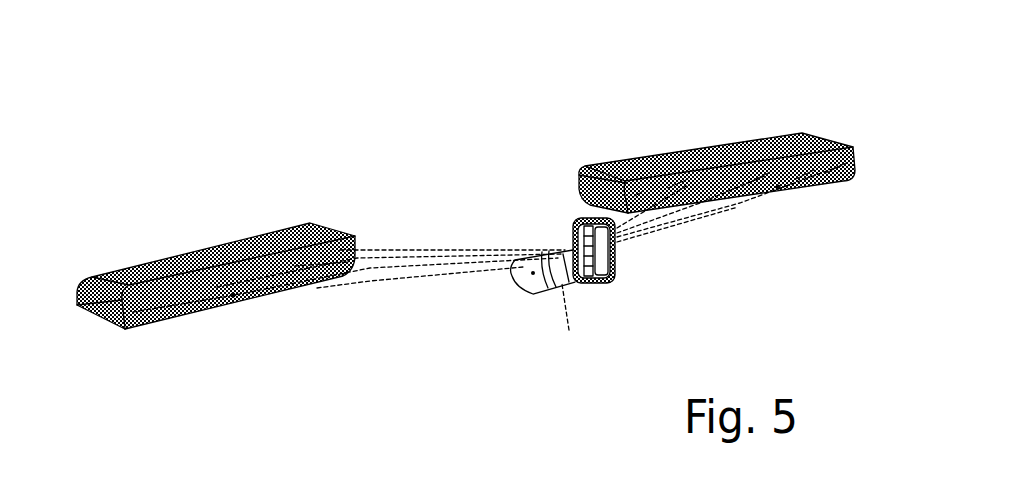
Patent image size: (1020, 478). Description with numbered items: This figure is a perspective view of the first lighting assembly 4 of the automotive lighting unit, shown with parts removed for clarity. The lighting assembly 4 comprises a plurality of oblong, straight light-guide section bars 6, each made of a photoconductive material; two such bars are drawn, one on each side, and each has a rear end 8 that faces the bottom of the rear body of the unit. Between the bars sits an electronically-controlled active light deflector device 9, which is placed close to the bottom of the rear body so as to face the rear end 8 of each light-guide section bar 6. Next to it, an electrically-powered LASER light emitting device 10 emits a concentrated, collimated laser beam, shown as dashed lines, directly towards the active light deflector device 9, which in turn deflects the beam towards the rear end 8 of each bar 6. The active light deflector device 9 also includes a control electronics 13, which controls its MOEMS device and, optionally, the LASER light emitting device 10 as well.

The lighting assembly 4 is at (358, 133).
The light-guide section bar 6 is at (213, 254).
The rear end 8 is at (240, 299).
The active light deflector device 9 is at (565, 209).
The LASER light emitting device 10 is at (518, 286).
The control electronics 13 is at (604, 257).